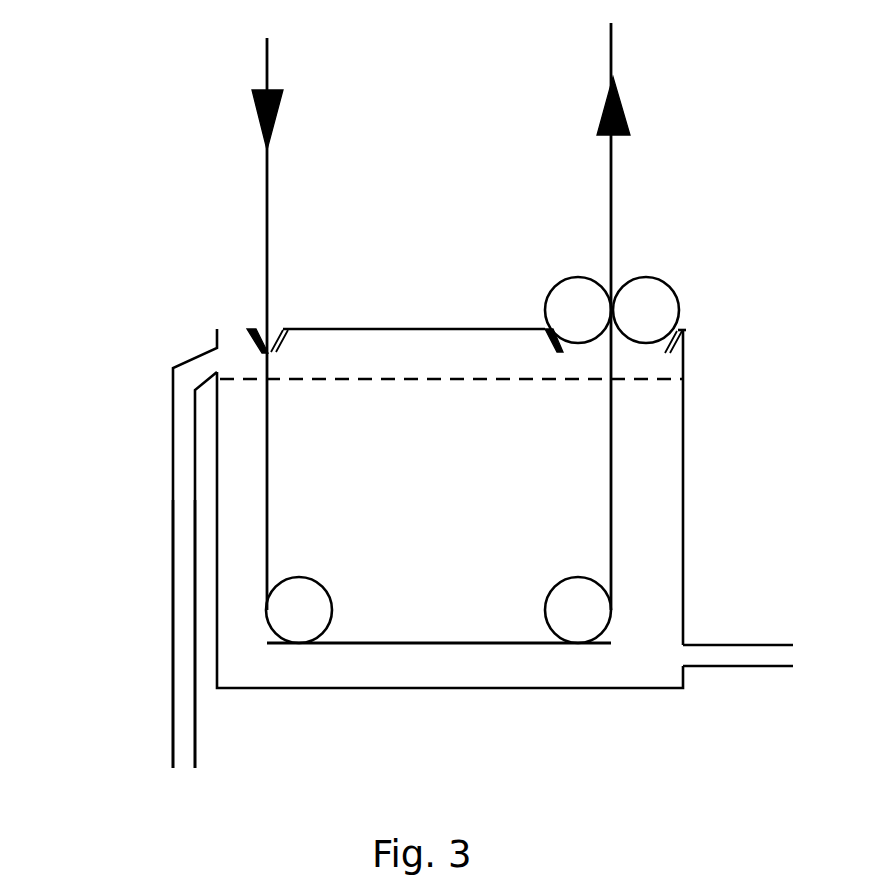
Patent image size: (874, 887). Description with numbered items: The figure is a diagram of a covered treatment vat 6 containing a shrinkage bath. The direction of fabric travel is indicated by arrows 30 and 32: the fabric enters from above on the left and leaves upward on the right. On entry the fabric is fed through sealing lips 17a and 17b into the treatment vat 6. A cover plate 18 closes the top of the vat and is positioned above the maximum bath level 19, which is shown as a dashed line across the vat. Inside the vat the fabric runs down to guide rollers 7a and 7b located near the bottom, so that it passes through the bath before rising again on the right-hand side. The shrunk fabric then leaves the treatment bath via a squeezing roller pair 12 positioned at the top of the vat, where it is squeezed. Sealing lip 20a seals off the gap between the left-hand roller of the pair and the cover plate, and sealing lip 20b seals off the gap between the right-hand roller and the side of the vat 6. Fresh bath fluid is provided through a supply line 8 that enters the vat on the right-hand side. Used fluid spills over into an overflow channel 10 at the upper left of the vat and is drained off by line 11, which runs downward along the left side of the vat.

The treatment vat 6 is at (437, 503).
The guide roller 7a is at (300, 612).
The guide roller 7b is at (573, 610).
The supply line 8 is at (742, 653).
The overflow channel 10 is at (195, 372).
The line 11 is at (183, 692).
The squeezing roller pair 12 is at (645, 303).
The sealing lip 17a is at (260, 350).
The sealing lip 17b is at (275, 323).
The cover plate 18 is at (403, 313).
The maximum bath level 19 is at (458, 367).
The sealing lip 20a is at (540, 323).
The sealing lip 20b is at (685, 338).
The arrow 30 is at (262, 122).
The arrow 32 is at (607, 100).